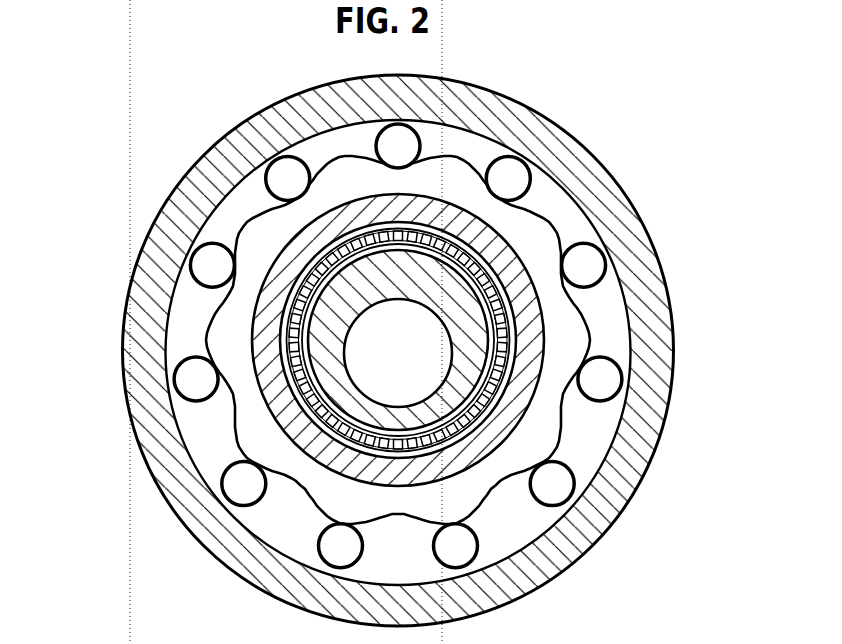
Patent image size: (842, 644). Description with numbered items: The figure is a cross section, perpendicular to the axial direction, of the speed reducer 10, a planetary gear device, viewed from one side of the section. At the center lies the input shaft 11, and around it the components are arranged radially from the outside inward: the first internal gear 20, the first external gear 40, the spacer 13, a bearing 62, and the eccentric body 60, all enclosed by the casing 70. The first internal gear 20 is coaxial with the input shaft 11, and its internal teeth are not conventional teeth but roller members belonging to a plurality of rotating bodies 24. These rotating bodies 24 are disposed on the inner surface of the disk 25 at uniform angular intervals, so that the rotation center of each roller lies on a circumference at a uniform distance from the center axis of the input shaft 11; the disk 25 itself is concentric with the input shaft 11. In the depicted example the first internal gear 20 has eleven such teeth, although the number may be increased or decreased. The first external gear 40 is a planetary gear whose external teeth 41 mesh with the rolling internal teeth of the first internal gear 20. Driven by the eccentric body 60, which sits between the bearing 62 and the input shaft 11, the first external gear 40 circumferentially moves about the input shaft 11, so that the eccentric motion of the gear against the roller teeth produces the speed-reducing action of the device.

The speed reducer 10 is at (712, 107).
The input shaft 11 is at (470, 362).
The spacer 13 is at (263, 400).
The first internal gear 20 is at (87, 123).
The rotating body 24 is at (526, 166).
The disk 25 is at (220, 227).
The first external gear 40 is at (220, 342).
The external teeth 41 is at (330, 160).
The eccentric body 60 is at (492, 342).
The bearing 62 is at (515, 325).
The casing 70 is at (127, 405).